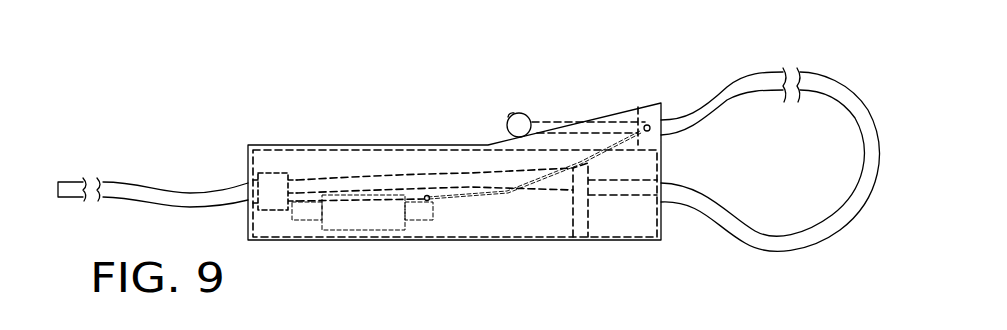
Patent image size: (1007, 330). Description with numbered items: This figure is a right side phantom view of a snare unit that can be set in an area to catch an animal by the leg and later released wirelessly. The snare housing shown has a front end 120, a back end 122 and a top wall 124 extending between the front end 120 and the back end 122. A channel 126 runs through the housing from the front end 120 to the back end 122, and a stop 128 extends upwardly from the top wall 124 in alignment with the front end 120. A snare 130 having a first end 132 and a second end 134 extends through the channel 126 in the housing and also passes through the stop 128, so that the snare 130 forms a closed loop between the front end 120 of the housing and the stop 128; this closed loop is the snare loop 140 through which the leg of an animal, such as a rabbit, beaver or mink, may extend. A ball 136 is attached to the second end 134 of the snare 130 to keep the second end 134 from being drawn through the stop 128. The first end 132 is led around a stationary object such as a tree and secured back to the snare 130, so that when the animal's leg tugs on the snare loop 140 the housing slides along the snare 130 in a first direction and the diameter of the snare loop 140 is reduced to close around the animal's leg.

The front end 120 is at (661, 229).
The back end 122 is at (243, 148).
The top wall 124 is at (423, 148).
The channel 126 is at (543, 203).
The stop 128 is at (654, 103).
The snare 130 is at (868, 187).
The first end 132 is at (56, 184).
The second end 134 is at (529, 117).
The ball 136 is at (512, 114).
The snare loop 140 is at (881, 121).